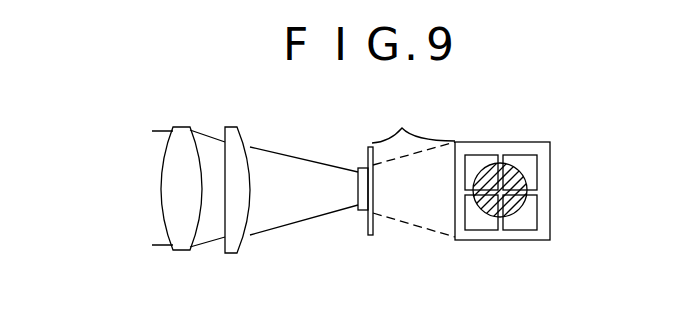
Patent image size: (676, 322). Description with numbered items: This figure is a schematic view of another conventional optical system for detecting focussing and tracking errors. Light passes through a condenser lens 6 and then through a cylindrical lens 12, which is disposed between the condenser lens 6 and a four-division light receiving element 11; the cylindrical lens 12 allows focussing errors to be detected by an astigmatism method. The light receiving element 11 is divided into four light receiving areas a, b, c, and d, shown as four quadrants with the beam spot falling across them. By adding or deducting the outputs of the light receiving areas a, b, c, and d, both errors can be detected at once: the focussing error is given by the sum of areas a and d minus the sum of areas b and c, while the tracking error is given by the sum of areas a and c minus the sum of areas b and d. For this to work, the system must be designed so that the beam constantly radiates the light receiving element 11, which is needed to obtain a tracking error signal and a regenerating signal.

The condenser lens 6 is at (182, 127).
The cylindrical lens 12 is at (230, 253).
The four-division light receiving element 11 is at (406, 169).
The light receiving area a is at (482, 155).
The light receiving area b is at (527, 158).
The light receiving area c is at (478, 228).
The light receiving area d is at (520, 228).